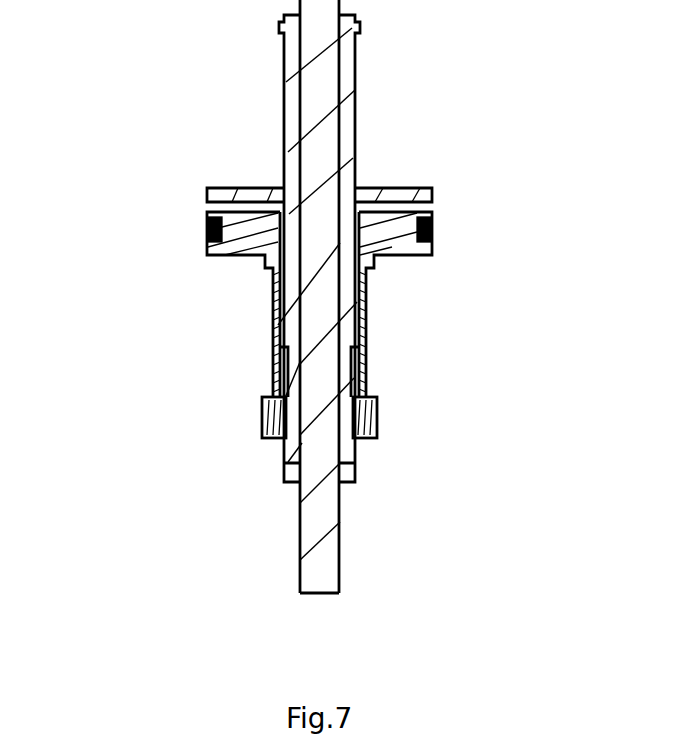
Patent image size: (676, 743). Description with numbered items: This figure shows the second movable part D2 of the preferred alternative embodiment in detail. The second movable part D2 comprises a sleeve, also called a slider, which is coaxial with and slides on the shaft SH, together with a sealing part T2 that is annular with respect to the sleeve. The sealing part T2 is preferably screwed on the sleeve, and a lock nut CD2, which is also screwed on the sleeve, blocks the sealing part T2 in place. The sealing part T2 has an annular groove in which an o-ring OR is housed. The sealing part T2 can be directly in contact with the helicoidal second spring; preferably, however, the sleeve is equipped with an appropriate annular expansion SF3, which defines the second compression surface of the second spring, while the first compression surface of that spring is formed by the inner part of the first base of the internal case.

The second movable part D2 is at (139, 564).
The shaft SH is at (272, 55).
The annular expansion SF3 is at (194, 196).
The sealing part T2 is at (197, 254).
The o-ring OR is at (443, 235).
The lock nut CD2 is at (250, 434).